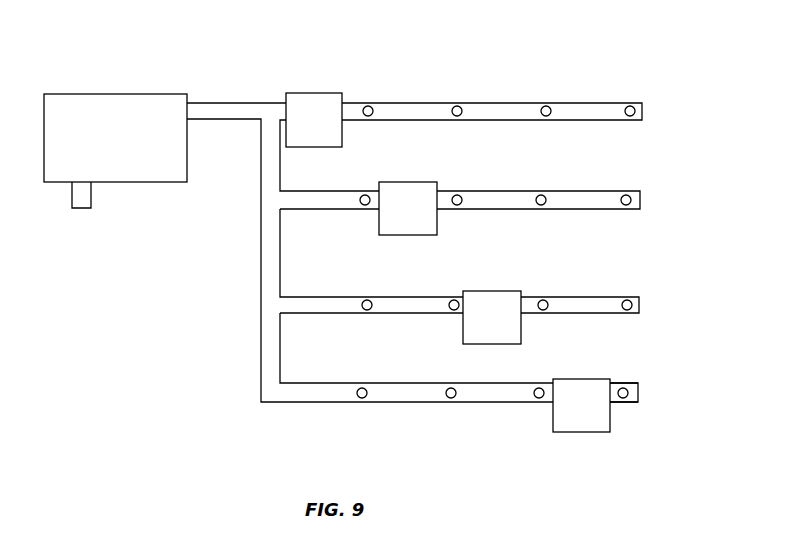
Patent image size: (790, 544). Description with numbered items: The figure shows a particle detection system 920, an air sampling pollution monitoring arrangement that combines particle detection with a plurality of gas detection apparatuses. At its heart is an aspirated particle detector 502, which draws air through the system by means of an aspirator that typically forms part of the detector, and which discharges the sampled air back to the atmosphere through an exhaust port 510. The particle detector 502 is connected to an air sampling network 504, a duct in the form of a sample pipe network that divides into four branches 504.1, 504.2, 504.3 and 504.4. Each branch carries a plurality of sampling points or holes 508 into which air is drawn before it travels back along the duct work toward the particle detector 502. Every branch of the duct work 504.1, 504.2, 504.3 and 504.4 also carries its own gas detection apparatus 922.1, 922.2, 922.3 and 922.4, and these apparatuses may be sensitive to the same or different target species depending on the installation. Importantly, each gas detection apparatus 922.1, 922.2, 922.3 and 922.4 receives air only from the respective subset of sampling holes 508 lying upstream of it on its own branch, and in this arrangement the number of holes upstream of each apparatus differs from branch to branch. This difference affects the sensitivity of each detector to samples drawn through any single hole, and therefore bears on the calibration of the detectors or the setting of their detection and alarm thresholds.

The particle detection system 920 is at (482, 75).
The particle detector 502 is at (130, 94).
The exhaust port 510 is at (91, 190).
The air sampling network 504 is at (248, 102).
The first branch 504.1 is at (603, 102).
The second branch 504.2 is at (603, 190).
The third branch 504.3 is at (602, 296).
The fourth branch 504.4 is at (623, 402).
The gas detection apparatus 922.1 is at (328, 93).
The gas detection apparatus 922.2 is at (405, 182).
The gas detection apparatus 922.3 is at (507, 291).
The gas detection apparatus 922.4 is at (597, 379).
The sampling holes 508 is at (630, 117).